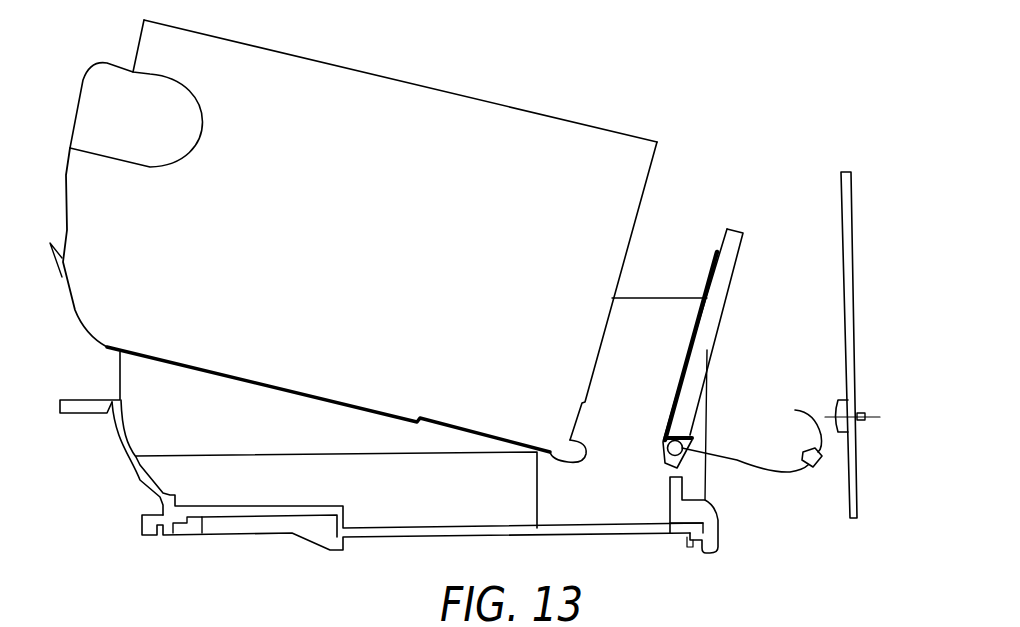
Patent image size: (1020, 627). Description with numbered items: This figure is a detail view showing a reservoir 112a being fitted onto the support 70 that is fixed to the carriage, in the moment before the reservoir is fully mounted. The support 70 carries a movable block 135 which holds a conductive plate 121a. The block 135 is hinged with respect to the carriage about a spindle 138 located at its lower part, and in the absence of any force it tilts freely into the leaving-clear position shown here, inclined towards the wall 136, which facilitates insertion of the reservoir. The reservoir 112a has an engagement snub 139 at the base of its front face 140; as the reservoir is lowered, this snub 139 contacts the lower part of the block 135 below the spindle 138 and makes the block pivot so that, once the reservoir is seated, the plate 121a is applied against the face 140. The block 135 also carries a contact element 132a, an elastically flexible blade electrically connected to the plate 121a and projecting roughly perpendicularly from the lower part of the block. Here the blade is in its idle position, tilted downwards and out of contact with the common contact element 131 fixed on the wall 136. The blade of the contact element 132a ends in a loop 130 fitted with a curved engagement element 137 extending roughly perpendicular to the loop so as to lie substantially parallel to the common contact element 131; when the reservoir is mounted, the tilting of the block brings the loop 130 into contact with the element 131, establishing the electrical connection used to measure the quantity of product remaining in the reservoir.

The reservoir 112a is at (398, 95).
The front face of the reservoir 140 is at (648, 192).
The engagement snub 139 is at (577, 450).
The support 70 is at (418, 528).
The movable block 135 is at (730, 282).
The plate 121a is at (696, 333).
The spindle 138 is at (683, 451).
The contact element 132a is at (725, 458).
The loop 130 is at (816, 460).
The curved engagement element 137 is at (812, 468).
The wall 136 is at (855, 312).
The common contact element 131 is at (845, 397).